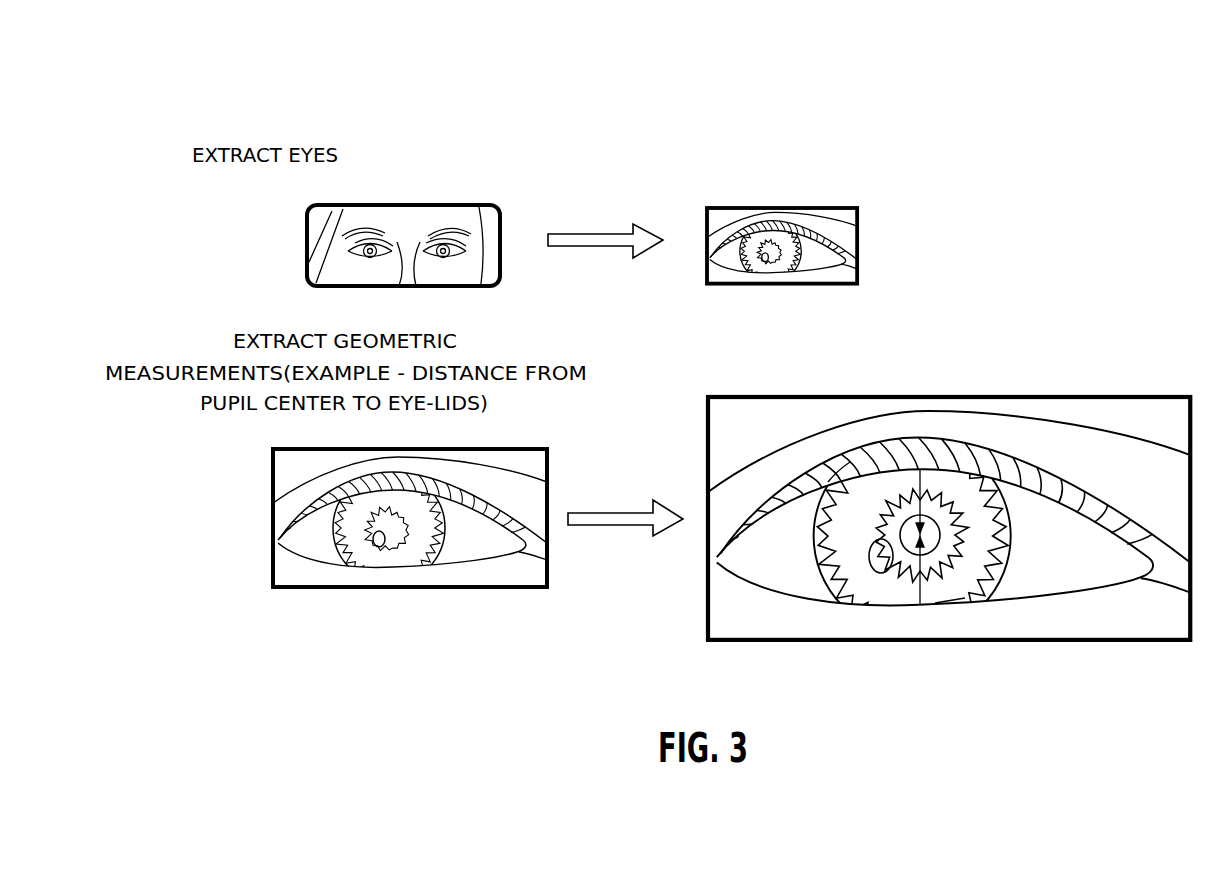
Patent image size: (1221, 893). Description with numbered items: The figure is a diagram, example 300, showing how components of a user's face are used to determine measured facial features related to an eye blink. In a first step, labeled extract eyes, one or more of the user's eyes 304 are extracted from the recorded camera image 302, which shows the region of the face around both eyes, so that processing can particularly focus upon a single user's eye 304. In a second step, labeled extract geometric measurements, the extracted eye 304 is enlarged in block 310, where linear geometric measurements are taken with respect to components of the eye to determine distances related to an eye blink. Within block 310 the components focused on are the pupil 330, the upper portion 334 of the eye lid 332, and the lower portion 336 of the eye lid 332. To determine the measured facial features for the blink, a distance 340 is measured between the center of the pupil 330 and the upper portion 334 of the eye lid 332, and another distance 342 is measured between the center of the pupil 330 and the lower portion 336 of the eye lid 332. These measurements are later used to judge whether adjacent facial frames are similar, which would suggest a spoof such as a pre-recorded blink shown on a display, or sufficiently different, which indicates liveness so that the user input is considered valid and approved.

The example 300 is at (155, 91).
The recorded camera image 302 is at (456, 203).
The user's eye 304 is at (826, 208).
The block 310 is at (1134, 397).
The pupil 330 is at (887, 573).
The eye lid 332 is at (835, 480).
The upper portion of the eye lid 334 is at (920, 470).
The lower portion of the eye lid 336 is at (920, 605).
The distance 340 is at (933, 517).
The distance 342 is at (950, 600).